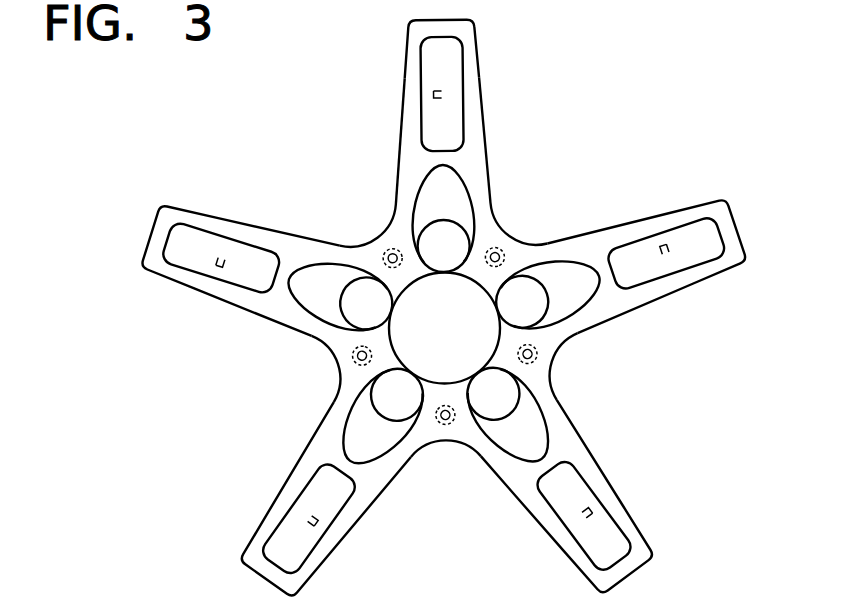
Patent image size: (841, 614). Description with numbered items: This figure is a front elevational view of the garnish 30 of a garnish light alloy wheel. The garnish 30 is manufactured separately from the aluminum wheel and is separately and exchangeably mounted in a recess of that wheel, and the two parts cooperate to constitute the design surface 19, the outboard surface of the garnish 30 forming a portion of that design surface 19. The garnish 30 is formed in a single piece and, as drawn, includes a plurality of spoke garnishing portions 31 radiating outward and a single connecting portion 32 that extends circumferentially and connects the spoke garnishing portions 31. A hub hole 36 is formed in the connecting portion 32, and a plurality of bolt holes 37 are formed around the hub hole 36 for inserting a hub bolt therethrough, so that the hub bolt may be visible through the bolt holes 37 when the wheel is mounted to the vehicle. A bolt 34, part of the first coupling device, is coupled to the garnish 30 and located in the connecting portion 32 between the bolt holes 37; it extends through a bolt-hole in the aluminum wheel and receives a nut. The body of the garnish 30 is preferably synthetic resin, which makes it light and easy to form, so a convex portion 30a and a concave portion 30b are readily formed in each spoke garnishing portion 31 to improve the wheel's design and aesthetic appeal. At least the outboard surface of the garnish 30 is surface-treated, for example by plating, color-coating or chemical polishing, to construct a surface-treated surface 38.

The design surface 19 is at (443, 308).
The garnish 30 is at (404, 112).
The convex portion 30a is at (461, 77).
The concave portion 30b is at (451, 193).
The spoke garnishing portion 31 is at (407, 60).
The connecting portion 32 is at (372, 243).
The bolt 34 is at (386, 248).
The hub hole 36 is at (407, 288).
The bolt hole 37 is at (362, 298).
The surface-treated surface 38 is at (645, 233).